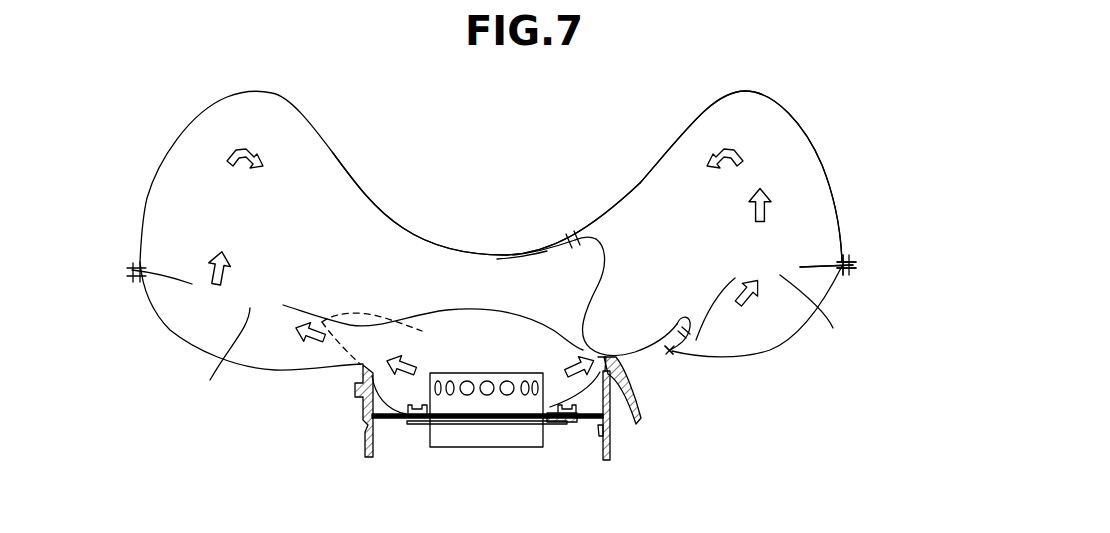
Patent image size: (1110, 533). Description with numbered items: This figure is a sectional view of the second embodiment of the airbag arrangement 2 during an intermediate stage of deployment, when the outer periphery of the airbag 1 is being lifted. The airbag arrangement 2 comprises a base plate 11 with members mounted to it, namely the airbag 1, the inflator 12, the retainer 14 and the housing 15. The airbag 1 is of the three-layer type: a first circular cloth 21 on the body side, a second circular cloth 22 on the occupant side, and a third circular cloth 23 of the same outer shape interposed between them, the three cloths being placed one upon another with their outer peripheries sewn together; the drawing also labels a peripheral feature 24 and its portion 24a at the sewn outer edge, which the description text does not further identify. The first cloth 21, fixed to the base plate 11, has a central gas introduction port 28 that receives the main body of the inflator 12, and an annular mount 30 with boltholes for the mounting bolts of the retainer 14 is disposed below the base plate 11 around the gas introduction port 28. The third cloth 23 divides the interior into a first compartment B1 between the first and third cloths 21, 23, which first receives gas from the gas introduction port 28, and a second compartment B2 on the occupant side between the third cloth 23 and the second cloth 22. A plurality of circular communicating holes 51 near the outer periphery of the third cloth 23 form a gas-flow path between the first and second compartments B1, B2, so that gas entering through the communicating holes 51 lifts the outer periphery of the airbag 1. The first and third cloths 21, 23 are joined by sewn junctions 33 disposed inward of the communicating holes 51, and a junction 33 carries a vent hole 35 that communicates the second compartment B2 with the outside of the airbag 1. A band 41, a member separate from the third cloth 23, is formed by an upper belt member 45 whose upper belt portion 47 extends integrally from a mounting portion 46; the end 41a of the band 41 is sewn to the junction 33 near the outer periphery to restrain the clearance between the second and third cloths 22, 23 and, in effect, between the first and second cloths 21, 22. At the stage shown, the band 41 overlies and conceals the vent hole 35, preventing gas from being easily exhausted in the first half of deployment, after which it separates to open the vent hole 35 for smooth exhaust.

The airbag 1 is at (814, 112).
The second circular cloth 22 is at (698, 120).
The second compartment B2 is at (382, 206).
The first compartment B1 is at (448, 322).
The mounting portion 46 is at (518, 253).
The upper belt member 45 is at (547, 243).
The upper belt portion 47 is at (597, 238).
The band 41 is at (586, 290).
The end of band 41a is at (683, 318).
The first circular cloth 21 is at (780, 343).
The third circular cloth 23 is at (812, 265).
The tab end 24a is at (850, 256).
The tab 24 is at (857, 263).
The communicating hole 51 is at (528, 341).
The junction 33 is at (674, 353).
The airbag arrangement 2 is at (489, 436).
The housing 15 is at (358, 430).
The base plate 11 is at (387, 420).
The gas introduction port 28 is at (540, 424).
The inflator 12 is at (477, 414).
The annular mount 30 is at (568, 421).
The retainer 14 is at (551, 423).
The vent hole 35 is at (640, 364).